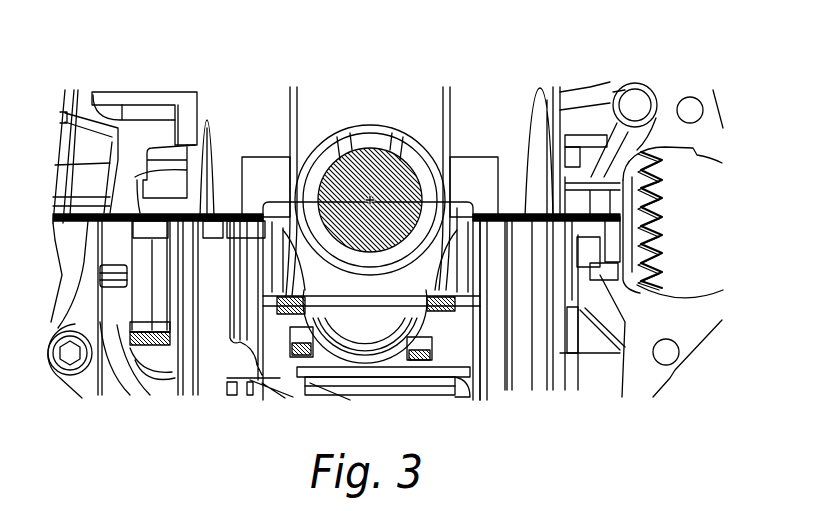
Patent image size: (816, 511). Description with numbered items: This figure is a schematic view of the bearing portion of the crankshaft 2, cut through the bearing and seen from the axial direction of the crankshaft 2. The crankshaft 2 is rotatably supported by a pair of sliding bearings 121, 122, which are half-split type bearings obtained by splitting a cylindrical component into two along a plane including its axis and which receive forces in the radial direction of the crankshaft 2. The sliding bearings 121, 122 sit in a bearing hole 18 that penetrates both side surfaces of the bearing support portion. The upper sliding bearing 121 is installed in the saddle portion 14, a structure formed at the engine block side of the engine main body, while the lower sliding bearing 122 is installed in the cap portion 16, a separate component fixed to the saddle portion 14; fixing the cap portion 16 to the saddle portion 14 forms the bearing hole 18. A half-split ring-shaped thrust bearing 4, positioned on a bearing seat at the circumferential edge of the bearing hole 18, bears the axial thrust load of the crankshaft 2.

The crankshaft 2 is at (337, 215).
The thrust bearing 4 is at (356, 138).
The saddle portion 14 is at (430, 108).
The cap portion 16 is at (441, 283).
The bearing hole 18 is at (420, 178).
The sliding bearing 121 is at (372, 147).
The sliding bearing 122 is at (363, 255).